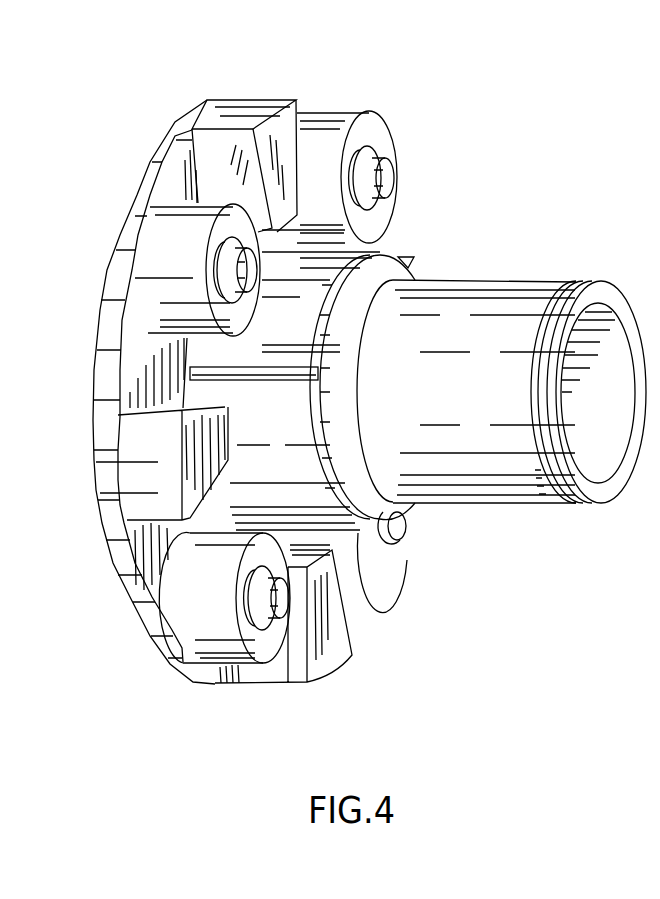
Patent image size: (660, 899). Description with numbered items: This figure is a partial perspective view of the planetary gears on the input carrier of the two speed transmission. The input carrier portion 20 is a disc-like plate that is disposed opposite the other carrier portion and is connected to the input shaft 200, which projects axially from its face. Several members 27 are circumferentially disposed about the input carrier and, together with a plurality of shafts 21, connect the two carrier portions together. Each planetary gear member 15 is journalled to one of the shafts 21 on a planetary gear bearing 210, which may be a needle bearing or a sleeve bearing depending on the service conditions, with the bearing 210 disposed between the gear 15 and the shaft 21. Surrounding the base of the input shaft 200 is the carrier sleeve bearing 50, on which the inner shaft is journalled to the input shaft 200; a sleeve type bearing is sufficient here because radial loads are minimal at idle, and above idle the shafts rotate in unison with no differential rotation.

The input carrier portion 20 is at (127, 556).
The members 27 is at (280, 97).
The planetary gear member 15 is at (388, 110).
The shaft 21 is at (383, 176).
The planetary gear bearing 210 is at (375, 150).
The sleeve bearing 50 is at (352, 255).
The input shaft 200 is at (499, 281).